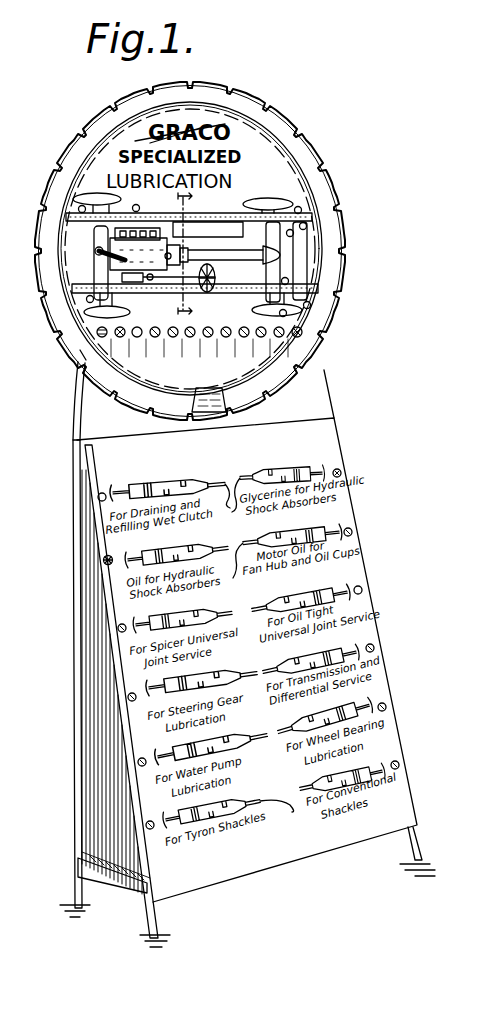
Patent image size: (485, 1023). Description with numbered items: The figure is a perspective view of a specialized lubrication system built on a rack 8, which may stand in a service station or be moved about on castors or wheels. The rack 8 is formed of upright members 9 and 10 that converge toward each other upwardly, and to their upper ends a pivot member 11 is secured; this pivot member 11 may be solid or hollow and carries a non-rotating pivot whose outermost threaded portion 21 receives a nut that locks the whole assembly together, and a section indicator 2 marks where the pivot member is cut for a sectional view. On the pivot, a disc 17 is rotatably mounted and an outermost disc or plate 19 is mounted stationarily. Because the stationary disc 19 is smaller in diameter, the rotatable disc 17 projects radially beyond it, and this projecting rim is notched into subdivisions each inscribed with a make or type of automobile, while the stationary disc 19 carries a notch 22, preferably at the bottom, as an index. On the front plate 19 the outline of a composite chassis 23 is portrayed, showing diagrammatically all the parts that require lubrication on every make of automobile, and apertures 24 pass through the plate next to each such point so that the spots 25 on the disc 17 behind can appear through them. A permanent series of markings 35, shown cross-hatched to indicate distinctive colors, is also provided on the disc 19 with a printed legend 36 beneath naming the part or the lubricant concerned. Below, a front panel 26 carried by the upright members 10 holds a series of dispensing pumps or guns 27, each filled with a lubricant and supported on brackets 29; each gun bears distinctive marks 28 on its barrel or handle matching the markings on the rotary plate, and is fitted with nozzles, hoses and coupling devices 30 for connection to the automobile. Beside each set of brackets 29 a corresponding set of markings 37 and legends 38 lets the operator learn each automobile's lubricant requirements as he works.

The section line 2 is at (198, 254).
The rack 8 is at (72, 661).
The upright member 9 is at (75, 757).
The upright member 10 is at (130, 797).
The pivot member 11 is at (118, 100).
The rotatable disc 17 is at (268, 111).
The stationary disc 19 is at (292, 183).
The threaded portion of the pivot 21 is at (195, 262).
The notch 22 is at (230, 396).
The composite chassis 23 is at (257, 280).
The apertures 24 is at (285, 281).
The spots 25 is at (290, 288).
The front panel 26 is at (357, 575).
The dispensing pumps or guns 27 is at (168, 490).
The distinctive marks 28 is at (148, 485).
The brackets 29 is at (283, 548).
The coupling or connecting devices 30 is at (224, 492).
The markings 35 is at (175, 327).
The printed legend 36 is at (83, 355).
The markings 37 is at (100, 497).
The legends 38 is at (127, 588).